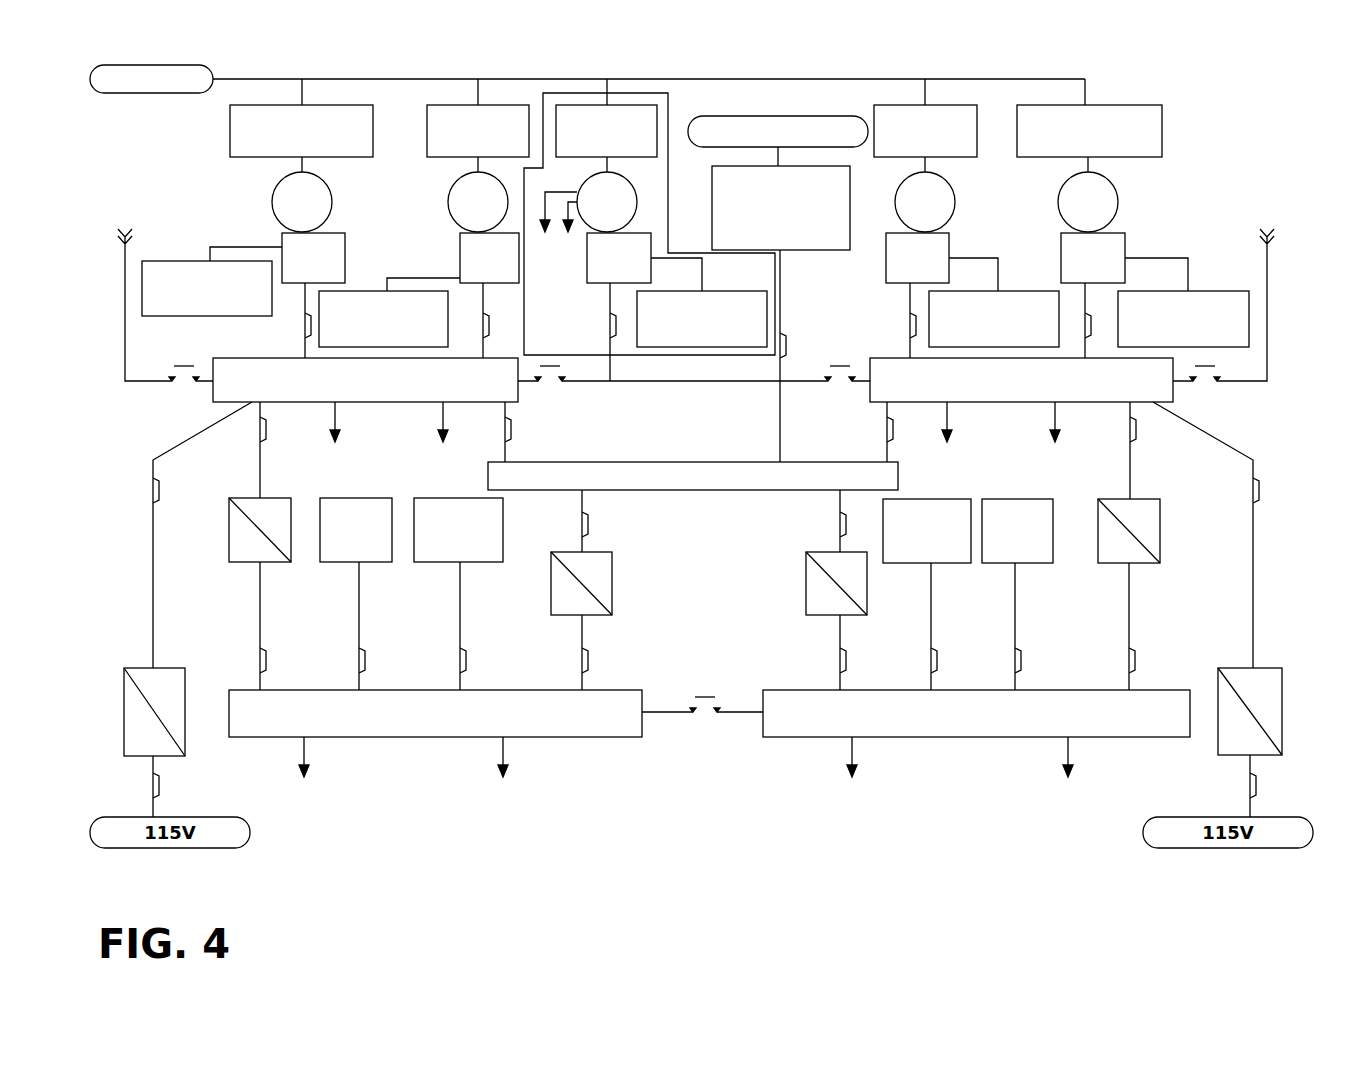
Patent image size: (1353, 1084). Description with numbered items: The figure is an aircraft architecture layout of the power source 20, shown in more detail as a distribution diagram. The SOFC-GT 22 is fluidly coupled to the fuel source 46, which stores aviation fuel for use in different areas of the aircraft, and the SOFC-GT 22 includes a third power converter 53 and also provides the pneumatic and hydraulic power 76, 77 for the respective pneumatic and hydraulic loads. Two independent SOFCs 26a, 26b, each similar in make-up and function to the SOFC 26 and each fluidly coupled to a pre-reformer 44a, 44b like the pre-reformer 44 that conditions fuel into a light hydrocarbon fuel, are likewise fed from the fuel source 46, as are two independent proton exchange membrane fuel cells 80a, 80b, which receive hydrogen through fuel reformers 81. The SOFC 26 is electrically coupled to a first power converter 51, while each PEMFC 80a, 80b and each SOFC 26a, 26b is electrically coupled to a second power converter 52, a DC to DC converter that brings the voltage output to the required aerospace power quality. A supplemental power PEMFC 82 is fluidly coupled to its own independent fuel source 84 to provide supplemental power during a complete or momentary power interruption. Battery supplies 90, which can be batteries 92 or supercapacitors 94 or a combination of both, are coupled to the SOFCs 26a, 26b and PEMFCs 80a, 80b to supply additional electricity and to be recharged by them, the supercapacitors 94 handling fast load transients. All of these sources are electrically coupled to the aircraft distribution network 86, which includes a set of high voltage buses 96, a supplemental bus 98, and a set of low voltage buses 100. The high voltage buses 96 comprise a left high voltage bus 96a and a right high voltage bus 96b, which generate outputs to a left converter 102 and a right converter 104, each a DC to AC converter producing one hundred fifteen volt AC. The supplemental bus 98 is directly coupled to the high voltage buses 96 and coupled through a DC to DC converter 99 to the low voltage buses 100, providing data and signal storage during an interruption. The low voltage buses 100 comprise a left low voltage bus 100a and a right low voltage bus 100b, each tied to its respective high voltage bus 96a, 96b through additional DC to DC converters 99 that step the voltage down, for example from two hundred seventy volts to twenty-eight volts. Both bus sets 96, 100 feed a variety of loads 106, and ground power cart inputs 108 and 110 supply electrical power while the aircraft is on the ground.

The power source 20 is at (1236, 138).
The SOFC-GT 22 is at (672, 108).
The SOFC 26 is at (607, 202).
The independent SOFC 26a is at (302, 202).
The independent SOFC 26b is at (1088, 202).
The pre-reformer 44 is at (606, 131).
The pre-reformer 44a is at (301, 131).
The pre-reformer 44b is at (1089, 131).
The fuel source 46 is at (151, 79).
The first power converter 51 is at (703, 258).
The second power converter 52 is at (704, 258).
The third power converter 53 is at (619, 258).
The pneumatic power 76 is at (554, 225).
The hydraulic power 77 is at (576, 230).
The proton exchange membrane fuel cell 80a is at (478, 202).
The proton exchange membrane fuel cell 80b is at (925, 202).
The fuel reformer 81 is at (702, 131).
The supplemental power PEMFC 82 is at (781, 314).
The independent fuel source 84 is at (778, 141).
The aircraft distribution network 86 is at (1258, 401).
The battery supply 90 is at (695, 297).
The battery 92 is at (645, 530).
The supercapacitor 94 is at (733, 530).
The set of high voltage buses 96 is at (632, 403).
The left high voltage bus 96a is at (365, 380).
The right high voltage bus 96b is at (1021, 380).
The supplemental bus 98 is at (693, 476).
The DC to DC converter 99 is at (694, 556).
The set of low voltage buses 100 is at (683, 676).
The left low voltage bus 100a is at (435, 713).
The right low voltage bus 100b is at (976, 713).
The left converter 102 is at (154, 742).
The right converter 104 is at (1250, 742).
The loads 106 is at (686, 605).
The ground power cart input 108 is at (159, 294).
The ground power cart input 110 is at (1229, 294).